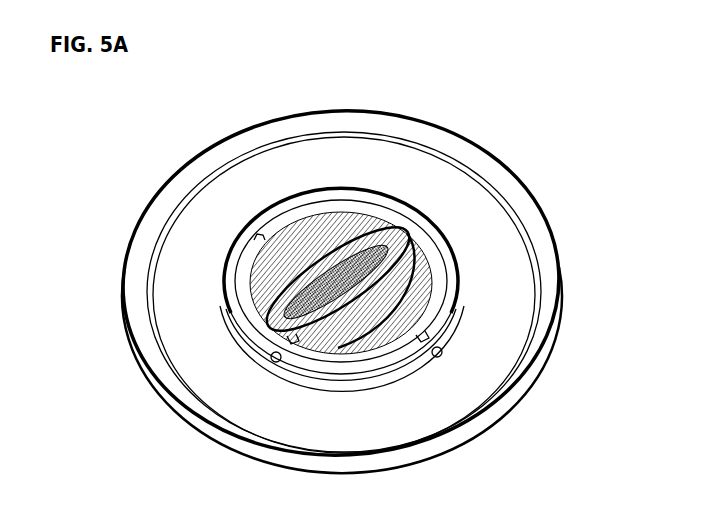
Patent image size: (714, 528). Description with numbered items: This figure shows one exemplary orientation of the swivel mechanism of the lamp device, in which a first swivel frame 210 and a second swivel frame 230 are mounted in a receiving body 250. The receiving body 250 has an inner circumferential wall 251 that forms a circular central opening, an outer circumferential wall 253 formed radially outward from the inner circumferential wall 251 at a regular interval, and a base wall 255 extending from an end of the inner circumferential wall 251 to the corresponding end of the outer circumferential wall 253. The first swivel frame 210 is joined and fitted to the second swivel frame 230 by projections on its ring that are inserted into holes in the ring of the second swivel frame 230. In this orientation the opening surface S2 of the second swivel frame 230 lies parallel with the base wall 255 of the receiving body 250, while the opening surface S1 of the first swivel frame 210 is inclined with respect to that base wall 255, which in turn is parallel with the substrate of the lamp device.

The first swivel frame 210 is at (400, 247).
The second swivel frame 230 is at (437, 283).
The receiving body 250 is at (385, 286).
The inner circumferential wall 251 is at (456, 313).
The outer circumferential wall 253 is at (530, 373).
The base wall 255 is at (510, 336).
The opening surface of the first swivel frame S1 is at (277, 235).
The opening surface of the second swivel frame S2 is at (295, 288).